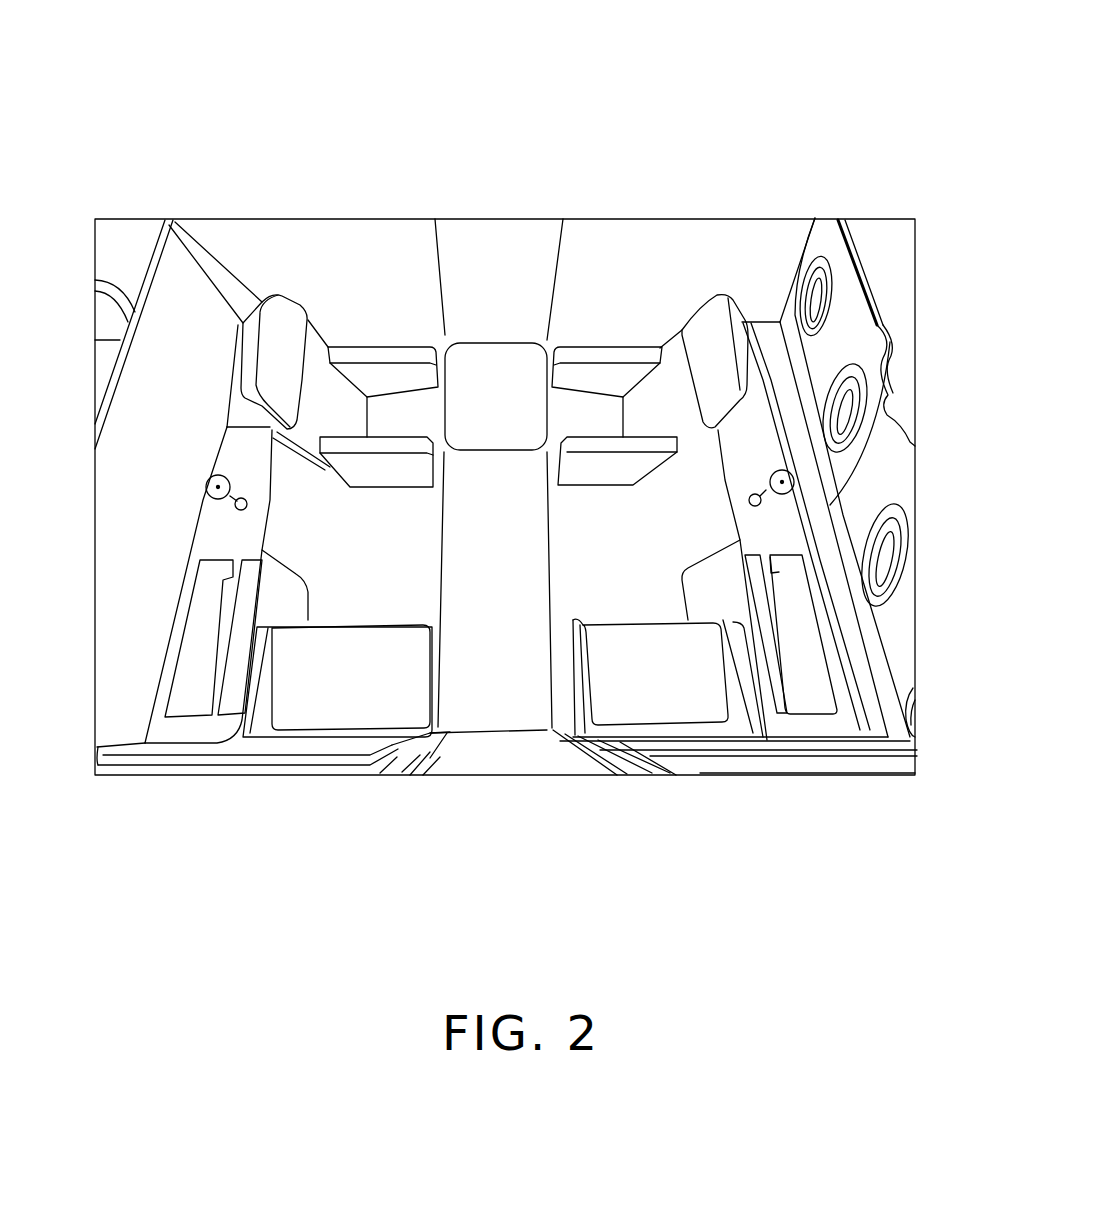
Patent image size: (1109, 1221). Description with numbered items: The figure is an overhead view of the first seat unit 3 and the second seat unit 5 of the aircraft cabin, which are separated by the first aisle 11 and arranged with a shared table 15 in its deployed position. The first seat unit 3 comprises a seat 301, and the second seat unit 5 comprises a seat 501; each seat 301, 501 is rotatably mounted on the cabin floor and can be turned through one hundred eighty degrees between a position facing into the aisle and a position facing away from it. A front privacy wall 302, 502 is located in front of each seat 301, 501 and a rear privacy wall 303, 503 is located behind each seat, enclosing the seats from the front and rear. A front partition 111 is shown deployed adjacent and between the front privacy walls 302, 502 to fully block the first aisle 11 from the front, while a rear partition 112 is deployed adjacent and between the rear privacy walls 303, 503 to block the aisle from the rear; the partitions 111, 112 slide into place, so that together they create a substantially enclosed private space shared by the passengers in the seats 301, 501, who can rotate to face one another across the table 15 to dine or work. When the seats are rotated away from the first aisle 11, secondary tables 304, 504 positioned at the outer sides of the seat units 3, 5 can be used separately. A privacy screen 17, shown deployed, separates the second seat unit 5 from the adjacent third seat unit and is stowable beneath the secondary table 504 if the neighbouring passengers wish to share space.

The first seat unit 3 is at (856, 201).
The second seat unit 5 is at (163, 130).
The first aisle 11 is at (478, 578).
The table 15 is at (513, 397).
The privacy screen 17 is at (169, 348).
The front partition 111 is at (531, 757).
The rear partition 112 is at (497, 267).
The seat 301 is at (742, 322).
The front privacy wall 302 is at (775, 765).
The rear privacy wall 303 is at (678, 240).
The secondary table 304 is at (773, 400).
The seat 501 is at (258, 320).
The front privacy wall 502 is at (228, 768).
The rear privacy wall 503 is at (372, 287).
The secondary table 504 is at (238, 355).